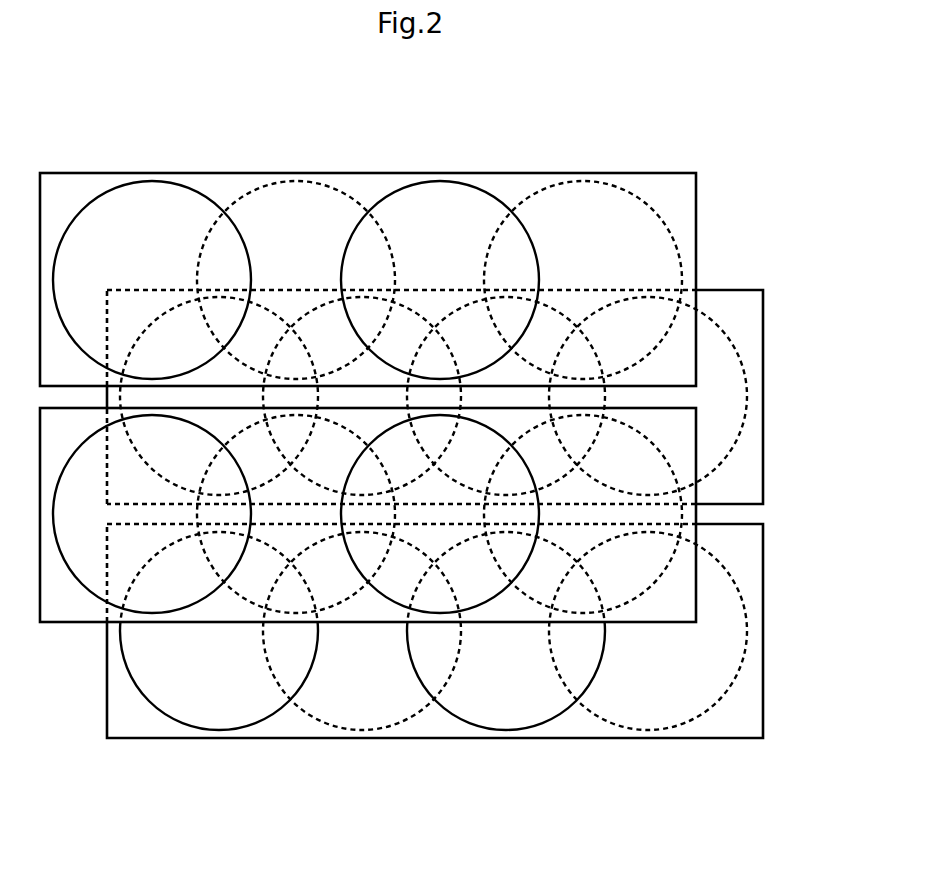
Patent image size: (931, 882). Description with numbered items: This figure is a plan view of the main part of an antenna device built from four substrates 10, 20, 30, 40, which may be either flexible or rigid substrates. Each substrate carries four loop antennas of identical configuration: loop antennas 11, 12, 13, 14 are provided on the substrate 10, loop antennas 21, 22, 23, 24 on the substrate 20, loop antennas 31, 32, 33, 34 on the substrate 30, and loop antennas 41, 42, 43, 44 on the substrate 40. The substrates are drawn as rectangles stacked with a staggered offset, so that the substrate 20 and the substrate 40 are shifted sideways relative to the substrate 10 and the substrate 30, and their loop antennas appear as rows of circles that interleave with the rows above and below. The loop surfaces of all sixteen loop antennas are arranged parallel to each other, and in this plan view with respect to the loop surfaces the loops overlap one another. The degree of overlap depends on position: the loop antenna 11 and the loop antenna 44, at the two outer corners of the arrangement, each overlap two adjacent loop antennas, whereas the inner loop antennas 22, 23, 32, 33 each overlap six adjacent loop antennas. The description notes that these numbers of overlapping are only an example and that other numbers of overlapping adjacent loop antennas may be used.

The substrate 10 is at (683, 183).
The loop antenna 11 is at (155, 174).
The loop antenna 12 is at (299, 174).
The loop antenna 13 is at (442, 174).
The loop antenna 14 is at (586, 174).
The substrate 20 is at (755, 315).
The loop antenna 21 is at (273, 302).
The loop antenna 22 is at (417, 305).
The loop antenna 23 is at (566, 304).
The loop antenna 24 is at (710, 313).
The substrate 30 is at (687, 423).
The loop antenna 31 is at (89, 602).
The loop antenna 32 is at (237, 607).
The loop antenna 33 is at (383, 609).
The loop antenna 34 is at (529, 609).
The substrate 40 is at (754, 553).
The loop antenna 41 is at (209, 740).
The loop antenna 42 is at (355, 740).
The loop antenna 43 is at (501, 740).
The loop antenna 44 is at (648, 740).